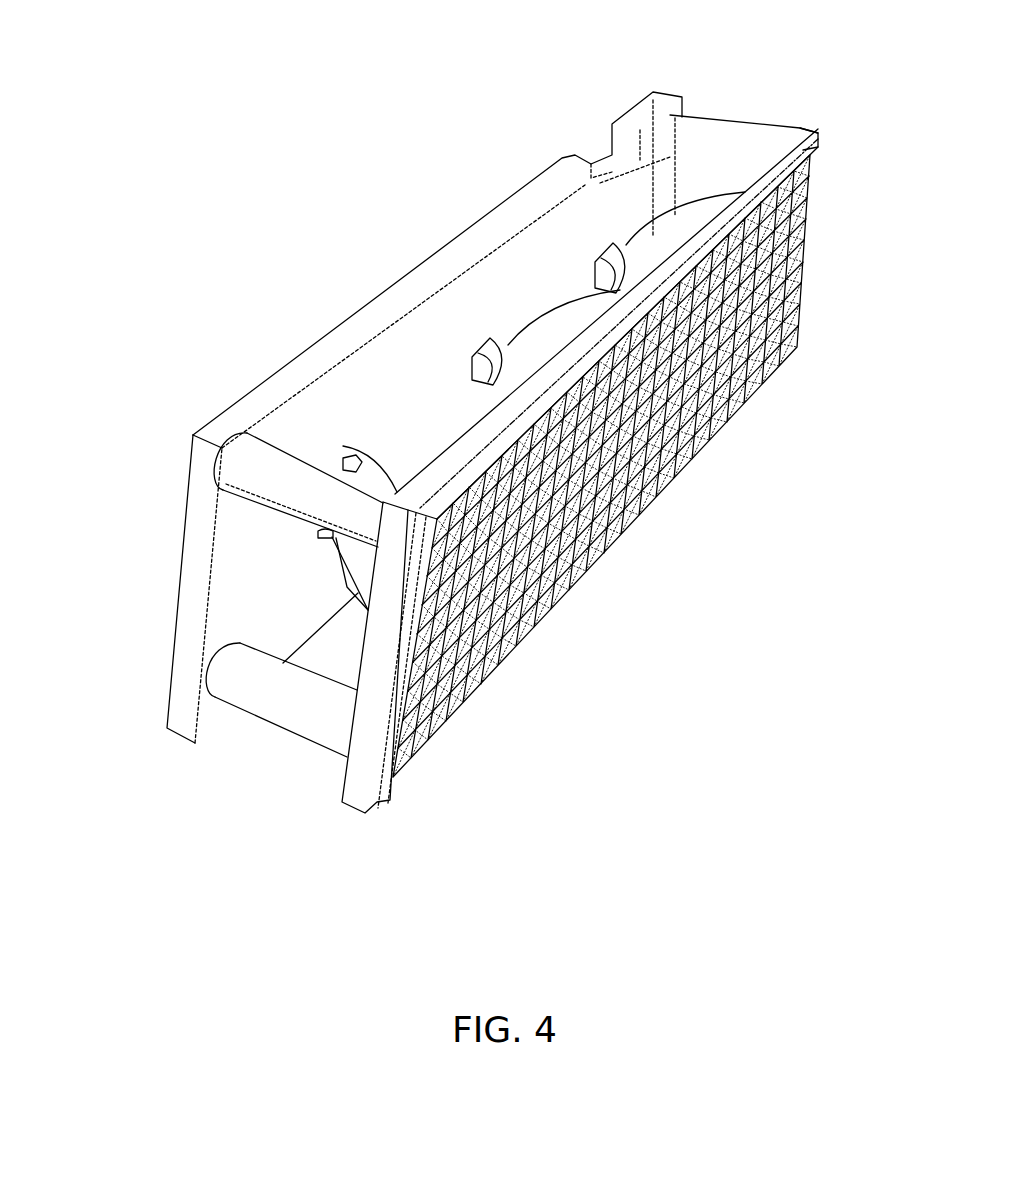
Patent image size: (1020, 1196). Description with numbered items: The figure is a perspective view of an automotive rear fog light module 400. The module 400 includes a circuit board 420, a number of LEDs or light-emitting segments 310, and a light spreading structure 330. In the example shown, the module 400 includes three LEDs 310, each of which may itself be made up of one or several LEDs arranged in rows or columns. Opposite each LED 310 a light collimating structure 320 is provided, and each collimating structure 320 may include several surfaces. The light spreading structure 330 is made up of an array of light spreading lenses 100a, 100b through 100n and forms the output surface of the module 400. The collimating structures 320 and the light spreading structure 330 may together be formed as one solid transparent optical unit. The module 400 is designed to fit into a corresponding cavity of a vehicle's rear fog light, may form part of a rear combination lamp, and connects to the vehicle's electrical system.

The rear fog light module 400 is at (188, 140).
The circuit board 420 is at (205, 495).
The light spreading structure 330 is at (816, 147).
The light collimating structure 320 is at (382, 470).
The LED 310 is at (345, 458).
The light spreading lens 100a is at (400, 492).
The light spreading lens 100b is at (452, 517).
The light spreading lens 100n is at (800, 340).